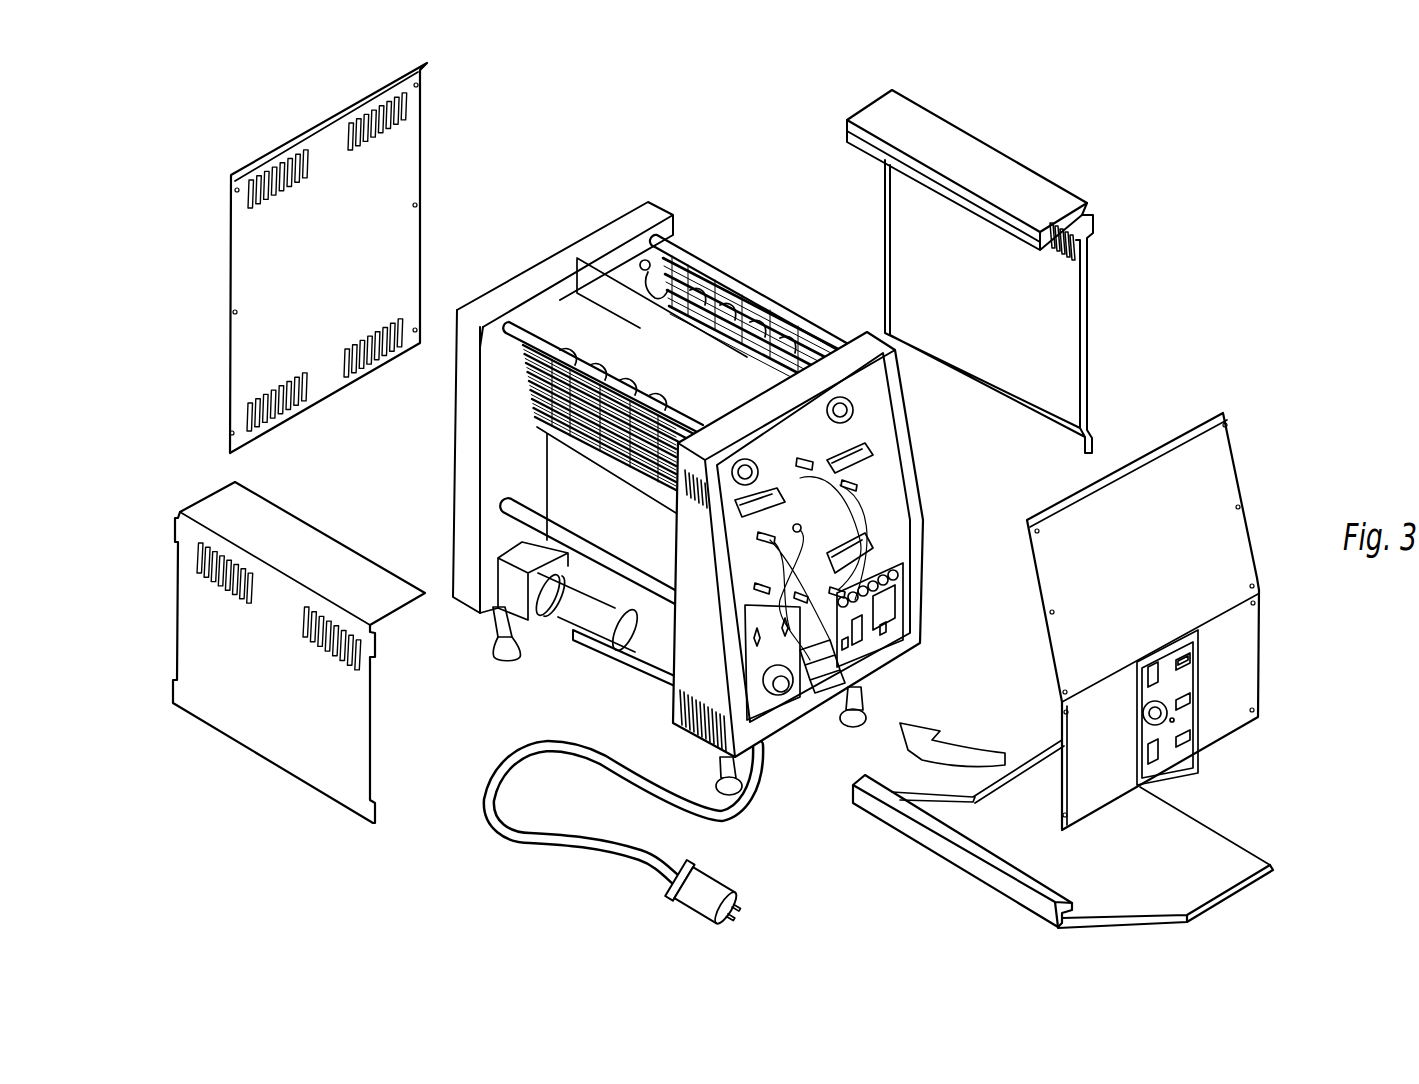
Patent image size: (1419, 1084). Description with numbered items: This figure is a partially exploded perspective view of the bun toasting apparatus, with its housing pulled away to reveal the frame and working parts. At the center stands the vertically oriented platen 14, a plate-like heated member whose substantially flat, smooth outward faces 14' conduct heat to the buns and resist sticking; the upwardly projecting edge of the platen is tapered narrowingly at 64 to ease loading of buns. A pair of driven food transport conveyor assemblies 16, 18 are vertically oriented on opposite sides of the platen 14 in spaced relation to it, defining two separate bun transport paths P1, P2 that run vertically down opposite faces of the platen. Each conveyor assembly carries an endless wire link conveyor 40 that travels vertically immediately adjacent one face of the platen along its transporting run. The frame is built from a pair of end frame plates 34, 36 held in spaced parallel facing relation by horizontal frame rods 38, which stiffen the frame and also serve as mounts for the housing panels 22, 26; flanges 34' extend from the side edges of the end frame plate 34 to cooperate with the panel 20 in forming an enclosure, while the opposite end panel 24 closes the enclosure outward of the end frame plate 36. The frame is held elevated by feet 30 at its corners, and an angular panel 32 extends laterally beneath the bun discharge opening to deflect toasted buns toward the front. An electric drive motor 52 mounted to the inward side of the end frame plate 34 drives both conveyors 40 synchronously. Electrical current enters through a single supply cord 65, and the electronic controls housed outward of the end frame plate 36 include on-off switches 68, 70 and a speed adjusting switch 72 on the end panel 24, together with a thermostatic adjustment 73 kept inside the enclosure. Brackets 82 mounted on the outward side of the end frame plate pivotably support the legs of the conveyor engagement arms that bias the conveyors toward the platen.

The central platen 14 is at (526, 268).
The outward faces of the platen 14' is at (699, 374).
The food transport conveyor assembly 16 is at (532, 315).
The food transport conveyor assembly 18 is at (648, 290).
The housing panel 20 is at (246, 240).
The housing panel 22 is at (1060, 293).
The housing panel 24 is at (1240, 648).
The housing panel 26 is at (260, 727).
The feet 30 is at (700, 767).
The angular panel 32 is at (1198, 890).
The end frame plate 34 is at (532, 407).
The flanges 34' is at (434, 553).
The end frame plate 36 is at (858, 418).
The frame rods 38 is at (767, 300).
The endless wire link conveyor 40 is at (743, 317).
The electric drive motor 52 is at (600, 627).
The tapered edge of the platen 64 is at (578, 278).
The electrical supply cord 65 is at (492, 826).
The on-off switch 68 is at (1160, 670).
The on-off switch 70 is at (1157, 757).
The adjusting switch 72 is at (1160, 722).
The thermostatic adjustment 73 is at (775, 690).
The brackets 82 is at (864, 493).
The bun transport path P1 is at (614, 338).
The bun transport path P2 is at (638, 268).